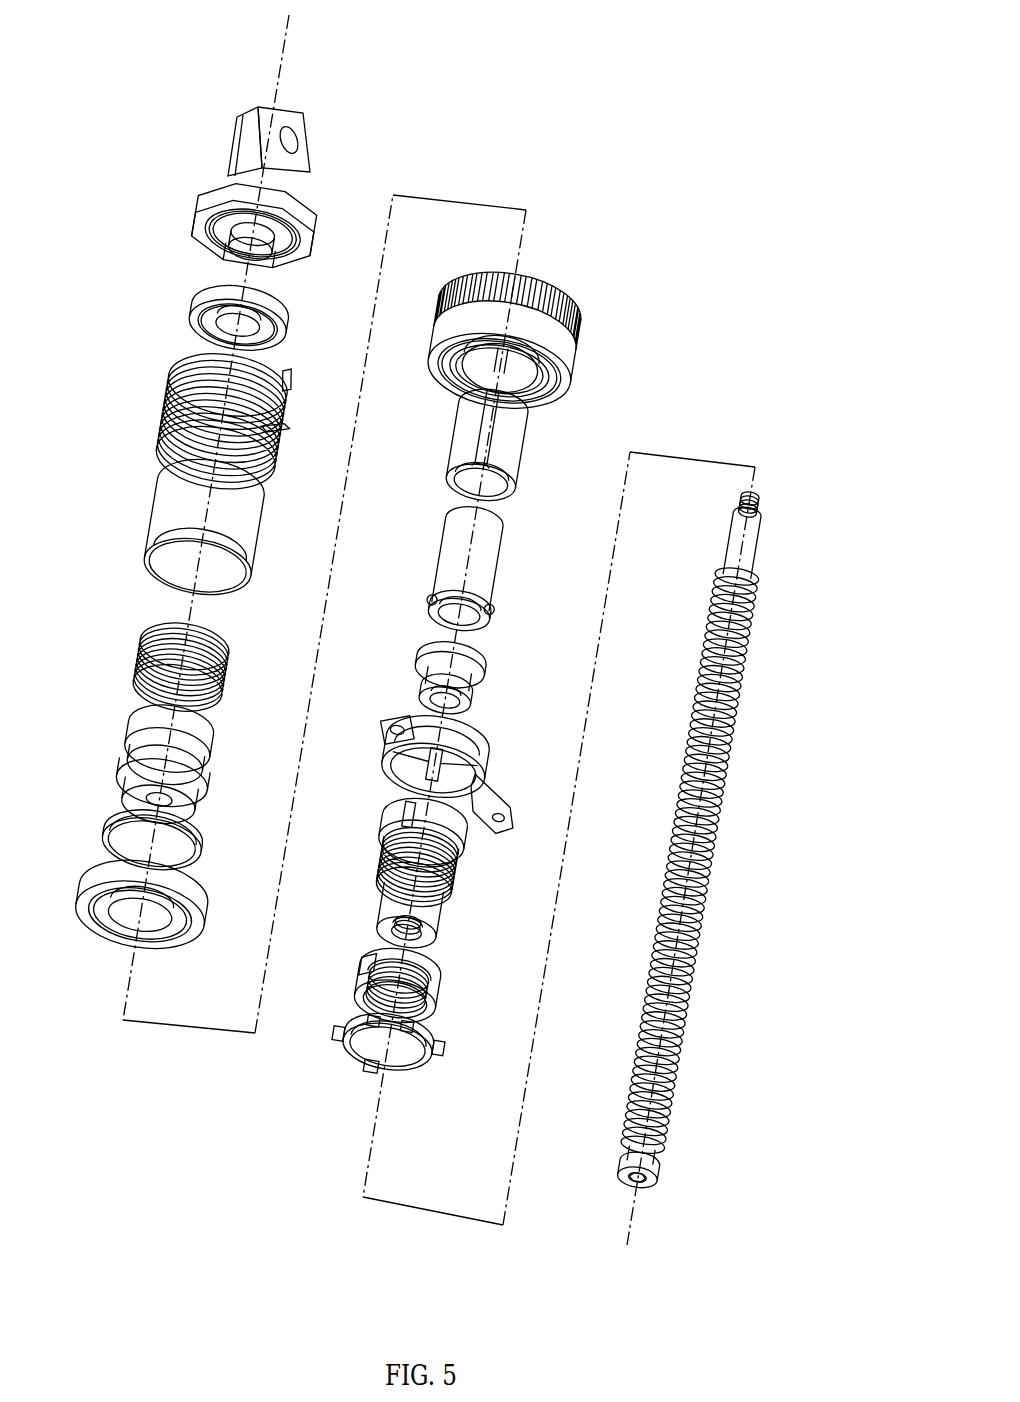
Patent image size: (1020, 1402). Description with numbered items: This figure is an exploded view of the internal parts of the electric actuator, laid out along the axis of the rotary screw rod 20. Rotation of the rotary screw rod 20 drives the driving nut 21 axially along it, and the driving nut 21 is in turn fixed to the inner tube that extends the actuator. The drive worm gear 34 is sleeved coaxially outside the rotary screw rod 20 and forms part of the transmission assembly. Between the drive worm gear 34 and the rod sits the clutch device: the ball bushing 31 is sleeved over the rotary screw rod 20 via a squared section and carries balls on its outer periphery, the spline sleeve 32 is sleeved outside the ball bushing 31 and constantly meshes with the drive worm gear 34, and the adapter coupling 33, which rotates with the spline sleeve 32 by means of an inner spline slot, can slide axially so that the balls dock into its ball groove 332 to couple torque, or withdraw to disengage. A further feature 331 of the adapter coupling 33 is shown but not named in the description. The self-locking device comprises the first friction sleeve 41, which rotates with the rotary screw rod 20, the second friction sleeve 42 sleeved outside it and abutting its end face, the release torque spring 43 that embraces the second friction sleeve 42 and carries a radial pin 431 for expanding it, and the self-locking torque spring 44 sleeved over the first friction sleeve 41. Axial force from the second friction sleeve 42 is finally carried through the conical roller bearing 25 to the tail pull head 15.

The tail pull head 15 is at (210, 200).
The conical roller bearing 25 is at (205, 293).
The release torque spring 43 is at (172, 383).
The pin 431 is at (285, 405).
The second friction sleeve 42 is at (160, 520).
The self-locking torque spring 44 is at (147, 643).
The first friction sleeve 41 is at (140, 743).
The drive worm gear 34 is at (537, 293).
The spline sleeve 32 is at (507, 443).
The ball bushing 31 is at (480, 575).
The adapter coupling 33 is at (457, 743).
The mounting lug 331 is at (390, 728).
The ball groove 332 is at (400, 780).
The driving nut 21 is at (423, 887).
The rotary screw rod 20 is at (722, 795).